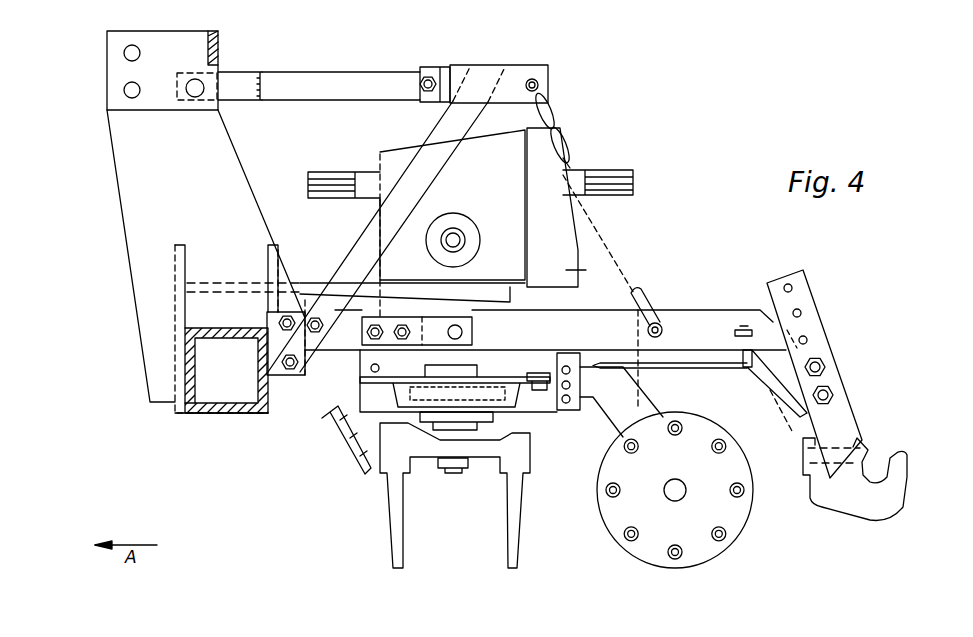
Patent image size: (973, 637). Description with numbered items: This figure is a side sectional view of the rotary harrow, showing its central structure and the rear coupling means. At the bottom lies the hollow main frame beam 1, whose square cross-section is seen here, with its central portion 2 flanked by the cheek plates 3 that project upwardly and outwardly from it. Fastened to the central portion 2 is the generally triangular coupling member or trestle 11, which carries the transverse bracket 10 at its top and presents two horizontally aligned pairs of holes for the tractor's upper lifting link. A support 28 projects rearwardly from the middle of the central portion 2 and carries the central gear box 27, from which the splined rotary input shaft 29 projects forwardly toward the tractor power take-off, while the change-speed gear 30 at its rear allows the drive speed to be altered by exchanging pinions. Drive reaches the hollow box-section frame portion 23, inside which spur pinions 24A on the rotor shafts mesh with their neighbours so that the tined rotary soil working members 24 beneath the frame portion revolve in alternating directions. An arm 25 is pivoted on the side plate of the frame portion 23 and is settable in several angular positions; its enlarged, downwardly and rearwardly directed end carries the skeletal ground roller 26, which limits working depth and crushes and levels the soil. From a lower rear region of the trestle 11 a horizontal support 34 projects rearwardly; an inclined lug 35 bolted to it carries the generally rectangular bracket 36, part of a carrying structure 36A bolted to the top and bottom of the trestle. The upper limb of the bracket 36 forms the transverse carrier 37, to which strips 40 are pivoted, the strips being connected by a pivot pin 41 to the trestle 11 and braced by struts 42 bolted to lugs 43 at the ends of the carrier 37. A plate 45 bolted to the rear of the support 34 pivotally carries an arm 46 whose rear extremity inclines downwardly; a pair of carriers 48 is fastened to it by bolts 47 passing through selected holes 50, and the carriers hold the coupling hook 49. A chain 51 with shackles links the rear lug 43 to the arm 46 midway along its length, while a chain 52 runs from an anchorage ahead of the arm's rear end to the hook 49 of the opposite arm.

The main frame beam 1 is at (195, 417).
The central portion 2 is at (233, 414).
The cheek plates 3 is at (178, 248).
The transverse bracket 10 is at (212, 46).
The coupling member or trestle 11 is at (123, 184).
The hollow box-section frame portion 23 is at (362, 400).
The rotary soil working member 24 is at (384, 543).
The pinion 24A is at (530, 401).
The arm 25 is at (620, 413).
The ground roller 26 is at (606, 527).
The central gear box 27 is at (404, 142).
The support 28 is at (322, 283).
The rotary input shaft 29 is at (328, 158).
The change-speed gear 30 is at (580, 209).
The support 34 is at (337, 416).
The lug 35 is at (292, 378).
The bracket 36 is at (356, 250).
The carrying structure 36A is at (318, 229).
The transverse carrier 37 is at (499, 78).
The strips 40 is at (257, 102).
The pivot pin 41 is at (195, 97).
The struts 42 is at (364, 72).
The lugs 43 is at (452, 67).
The plate 45 is at (432, 318).
The arm 46 is at (696, 312).
The bolts 47 is at (835, 395).
The carriers 48 is at (810, 336).
The coupling hook 49 is at (905, 494).
The holes 50 is at (795, 288).
The chain 51 is at (557, 113).
The chain 52 is at (776, 410).